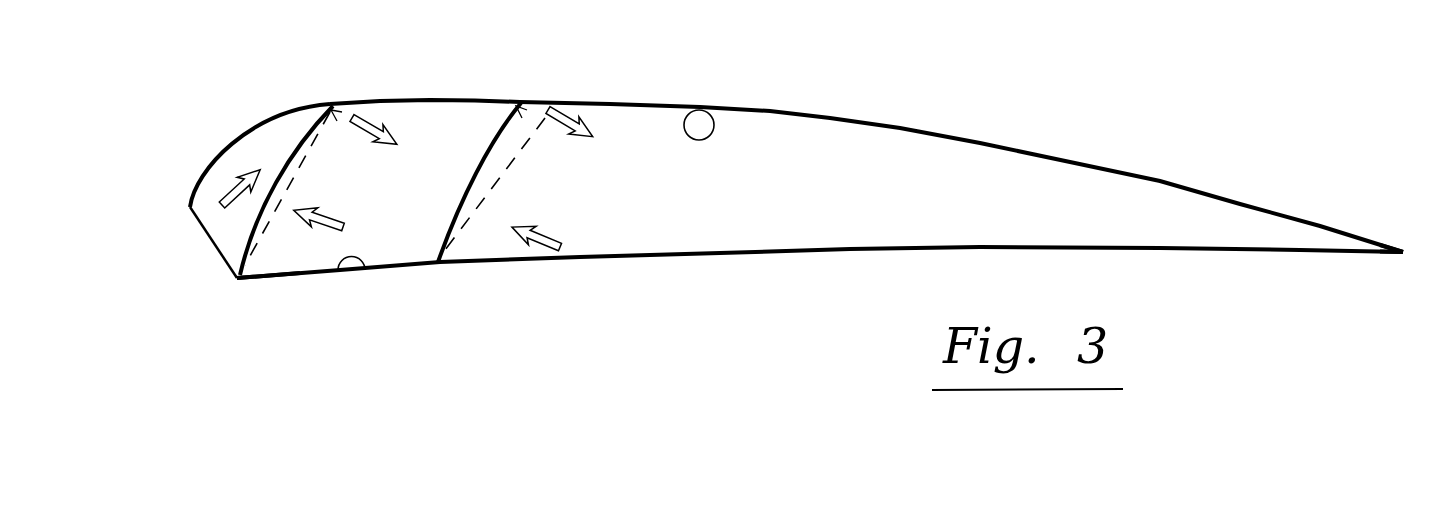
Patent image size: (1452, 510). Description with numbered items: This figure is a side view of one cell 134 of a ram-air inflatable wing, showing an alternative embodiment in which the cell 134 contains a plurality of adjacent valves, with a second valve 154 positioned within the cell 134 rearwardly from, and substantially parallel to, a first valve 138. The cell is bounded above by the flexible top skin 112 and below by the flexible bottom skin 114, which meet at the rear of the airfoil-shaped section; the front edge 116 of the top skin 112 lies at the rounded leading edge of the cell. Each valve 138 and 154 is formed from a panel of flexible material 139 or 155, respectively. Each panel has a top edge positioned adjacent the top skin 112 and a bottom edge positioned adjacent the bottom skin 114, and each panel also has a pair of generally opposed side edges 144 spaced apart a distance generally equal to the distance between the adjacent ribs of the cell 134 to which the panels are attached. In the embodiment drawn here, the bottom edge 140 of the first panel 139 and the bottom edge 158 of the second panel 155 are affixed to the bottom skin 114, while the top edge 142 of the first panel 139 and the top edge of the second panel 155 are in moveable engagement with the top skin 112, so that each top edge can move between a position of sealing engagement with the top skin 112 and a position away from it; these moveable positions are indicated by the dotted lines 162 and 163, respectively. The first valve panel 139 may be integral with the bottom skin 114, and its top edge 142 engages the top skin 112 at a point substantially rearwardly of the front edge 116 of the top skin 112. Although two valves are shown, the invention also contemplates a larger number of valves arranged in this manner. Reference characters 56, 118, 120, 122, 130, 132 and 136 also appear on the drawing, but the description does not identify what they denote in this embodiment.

The rear rib 56 is at (512, 108).
The top skin 112 is at (827, 117).
The bottom skin 114 is at (738, 255).
The front edge of the top skin 116 is at (204, 228).
The lower leading edge portion 118 is at (244, 283).
The trailing edge 120 is at (1365, 243).
The trailing edge lower surface 122 is at (1357, 253).
The detail region 130 is at (688, 100).
The lower skin 132 is at (366, 272).
The cell 134 is at (237, 293).
The nose inner surface 136 is at (210, 198).
The first valve 138 is at (283, 166).
The panel of flexible material 139 is at (302, 147).
The bottom edge 140 is at (231, 273).
The top edge 142 is at (336, 110).
The side edges 144 is at (270, 200).
The second valve 154 is at (460, 197).
The panel of flexible material 155 is at (497, 140).
The bottom edge 158 is at (436, 258).
The dotted line 162 is at (324, 160).
The dotted line 163 is at (509, 168).